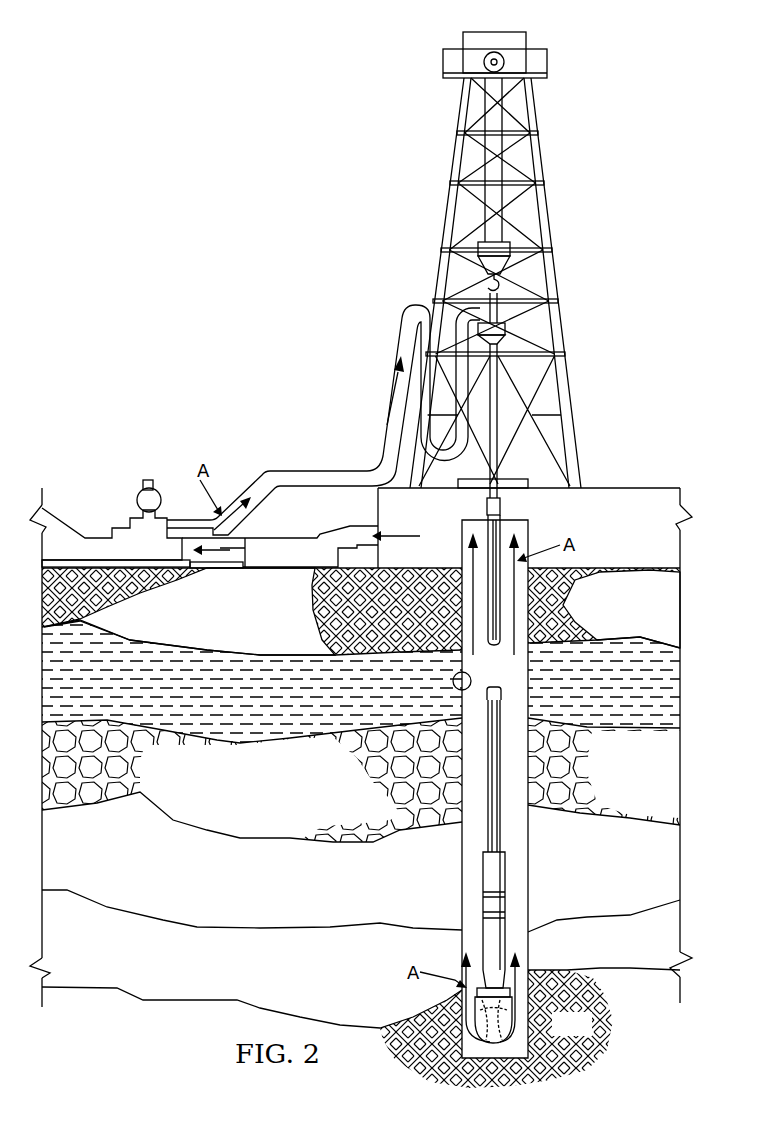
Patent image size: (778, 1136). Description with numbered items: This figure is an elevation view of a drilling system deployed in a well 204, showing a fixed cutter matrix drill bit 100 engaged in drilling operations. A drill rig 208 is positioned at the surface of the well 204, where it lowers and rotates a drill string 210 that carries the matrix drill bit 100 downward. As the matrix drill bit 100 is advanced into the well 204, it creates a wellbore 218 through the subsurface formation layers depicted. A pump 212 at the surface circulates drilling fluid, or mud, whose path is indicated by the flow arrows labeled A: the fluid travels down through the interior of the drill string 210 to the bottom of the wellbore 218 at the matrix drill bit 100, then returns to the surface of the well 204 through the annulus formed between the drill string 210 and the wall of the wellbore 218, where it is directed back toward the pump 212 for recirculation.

The matrix drill bit 100 is at (515, 1012).
The well 204 is at (517, 695).
The drill rig 208 is at (382, 205).
The drill string 210 is at (512, 507).
The pump 212 is at (118, 512).
The wellbore 218 is at (453, 683).